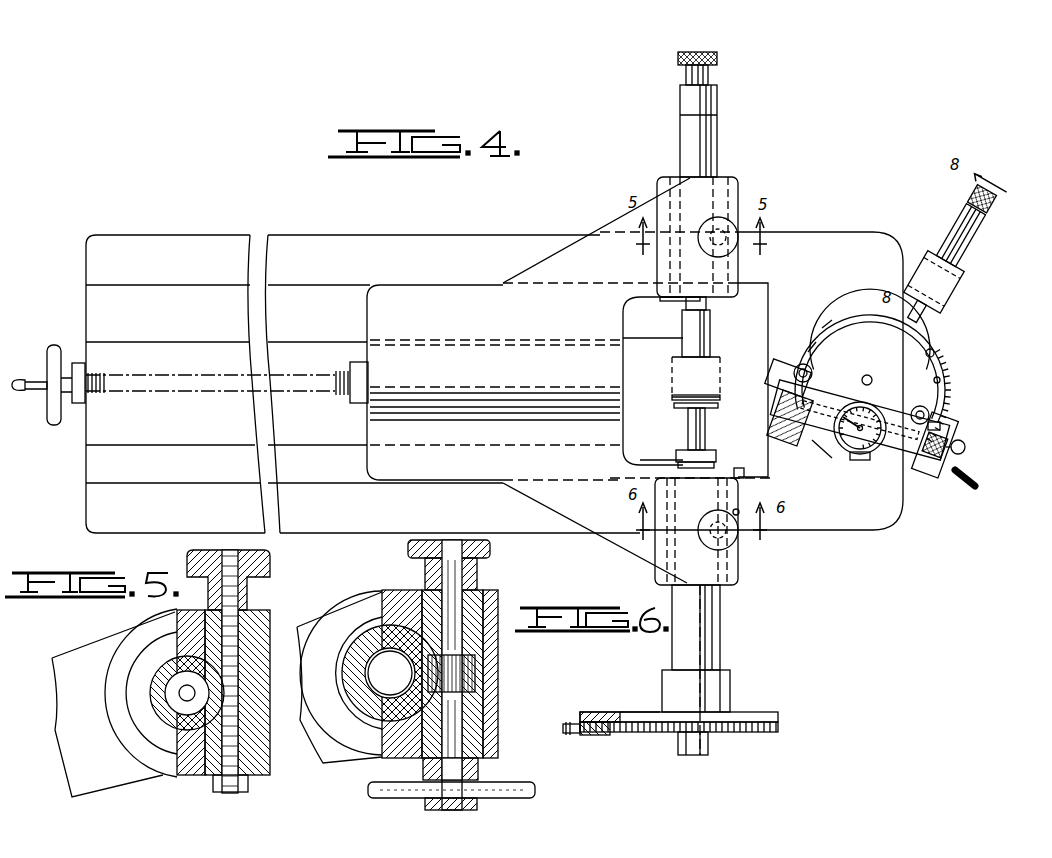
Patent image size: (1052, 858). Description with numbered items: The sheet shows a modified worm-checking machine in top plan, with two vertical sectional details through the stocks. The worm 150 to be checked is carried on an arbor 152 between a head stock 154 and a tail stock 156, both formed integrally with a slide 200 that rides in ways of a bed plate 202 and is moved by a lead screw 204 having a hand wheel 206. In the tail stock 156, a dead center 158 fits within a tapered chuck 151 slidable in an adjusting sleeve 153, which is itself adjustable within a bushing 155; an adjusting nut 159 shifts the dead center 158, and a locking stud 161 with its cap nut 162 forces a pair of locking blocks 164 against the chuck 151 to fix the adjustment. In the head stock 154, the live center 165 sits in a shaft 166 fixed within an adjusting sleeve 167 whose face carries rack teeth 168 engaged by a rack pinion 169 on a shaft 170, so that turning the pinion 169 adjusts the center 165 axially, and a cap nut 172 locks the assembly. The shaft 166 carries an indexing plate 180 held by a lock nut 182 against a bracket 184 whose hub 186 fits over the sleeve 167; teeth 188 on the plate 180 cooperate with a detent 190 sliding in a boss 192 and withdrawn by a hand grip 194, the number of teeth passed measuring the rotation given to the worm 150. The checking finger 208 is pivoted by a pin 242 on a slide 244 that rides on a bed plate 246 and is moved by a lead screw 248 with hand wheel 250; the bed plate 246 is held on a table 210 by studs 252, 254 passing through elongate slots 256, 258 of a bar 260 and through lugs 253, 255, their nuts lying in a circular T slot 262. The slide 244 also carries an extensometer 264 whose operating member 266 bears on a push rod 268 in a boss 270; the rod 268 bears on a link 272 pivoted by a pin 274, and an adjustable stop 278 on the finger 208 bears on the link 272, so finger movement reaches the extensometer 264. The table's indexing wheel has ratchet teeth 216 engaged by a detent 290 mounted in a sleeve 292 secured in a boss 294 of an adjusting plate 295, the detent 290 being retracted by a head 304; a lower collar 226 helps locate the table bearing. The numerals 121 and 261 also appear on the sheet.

In FIG. 4, the handle bar 121 is at (738, 510).
In FIG. 6, the handle bar 121 is at (492, 783).
In FIG. 4, the worm 150 is at (680, 400).
In FIG. 5, the tapered chuck 151 is at (165, 700).
In FIG. 4, the arbor 152 is at (683, 427).
In FIG. 4, the adjusting sleeve 153 is at (717, 130).
In FIG. 5, the adjusting sleeve 153 is at (118, 742).
In FIG. 4, the head stock 154 is at (742, 583).
In FIG. 6, the head stock 154 is at (352, 756).
In FIG. 5, the bushing 155 is at (138, 672).
In FIG. 4, the tail stock 156 is at (738, 185).
In FIG. 5, the tail stock 156 is at (272, 603).
In FIG. 4, the dead center 158 is at (745, 290).
In FIG. 4, the adjusting nut 159 is at (718, 58).
In FIG. 5, the locking stud 161 is at (240, 790).
In FIG. 4, the cap nut 162 is at (729, 222).
In FIG. 5, the cap nut 162 is at (270, 566).
In FIG. 6, the locking blocks 164 is at (289, 622).
In FIG. 4, the live center 165 is at (624, 456).
In FIG. 6, the shaft 166 is at (390, 673).
In FIG. 4, the adjusting sleeve 167 is at (720, 640).
In FIG. 6, the adjusting sleeve 167 is at (387, 756).
In FIG. 6, the rack teeth 168 is at (386, 650).
In FIG. 6, the rack pinion 169 is at (476, 672).
In FIG. 6, the shaft 170 is at (458, 612).
In FIG. 4, the cap nut 172 is at (738, 536).
In FIG. 6, the cap nut 172 is at (475, 576).
In FIG. 4, the indexing plate 180 is at (760, 712).
In FIG. 4, the lock nut 182 is at (708, 748).
In FIG. 4, the bracket 184 is at (636, 712).
In FIG. 4, the hub 186 is at (730, 680).
In FIG. 4, the teeth 188 is at (778, 731).
In FIG. 4, the detent 190 is at (590, 736).
In FIG. 4, the boss 192 is at (580, 716).
In FIG. 4, the hand grip 194 is at (566, 736).
In FIG. 4, the slide 200 is at (553, 380).
In FIG. 4, the bed plate 202 is at (413, 382).
In FIG. 4, the lead screw 204 is at (340, 396).
In FIG. 4, the hand wheel 206 is at (52, 345).
In FIG. 4, the checking finger 208 is at (772, 365).
In FIG. 4, the table 210 is at (867, 375).
In FIG. 4, the ratchet teeth 216 is at (930, 405).
In FIG. 4, the lower collar 226 is at (754, 481).
In FIG. 4, the pin 242 is at (800, 368).
In FIG. 4, the slide 244 is at (870, 456).
In FIG. 4, the bed plate 246 is at (947, 438).
In FIG. 4, the lead screw 248 is at (965, 482).
In FIG. 4, the hand wheel 250 is at (966, 450).
In FIG. 4, the stud 252 is at (941, 380).
In FIG. 4, the lug 253 is at (942, 424).
In FIG. 4, the stud 254 is at (870, 368).
In FIG. 4, the lug 255 is at (812, 350).
In FIG. 4, the elongate slot 256 is at (870, 370).
In FIG. 4, the elongate slot 258 is at (870, 335).
In FIG. 4, the bar 260 is at (935, 354).
In FIG. 4, the sector teeth 261 is at (933, 340).
In FIG. 4, the circular T slot 262 is at (830, 328).
In FIG. 4, the extensometer 264 is at (852, 460).
In FIG. 4, the operating member 266 is at (822, 450).
In FIG. 4, the push rod 268 is at (859, 419).
In FIG. 4, the boss 270 is at (796, 440).
In FIG. 4, the link 272 is at (710, 379).
In FIG. 4, the pin 274 is at (711, 458).
In FIG. 4, the adjustable stop 278 is at (735, 352).
In FIG. 4, the detent 290 is at (950, 320).
In FIG. 4, the sleeve 292 is at (978, 228).
In FIG. 4, the boss 294 is at (962, 280).
In FIG. 4, the adjusting plate 295 is at (918, 255).
In FIG. 4, the head 304 is at (988, 190).